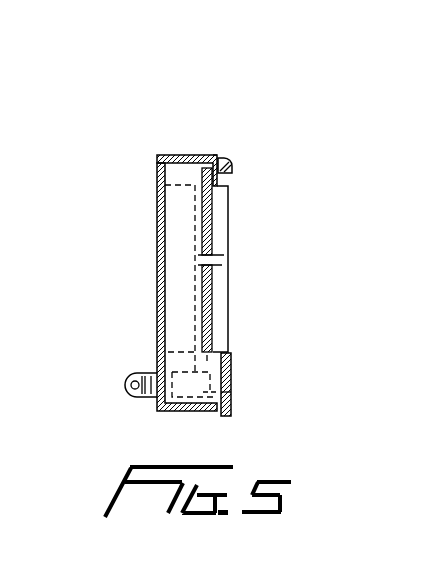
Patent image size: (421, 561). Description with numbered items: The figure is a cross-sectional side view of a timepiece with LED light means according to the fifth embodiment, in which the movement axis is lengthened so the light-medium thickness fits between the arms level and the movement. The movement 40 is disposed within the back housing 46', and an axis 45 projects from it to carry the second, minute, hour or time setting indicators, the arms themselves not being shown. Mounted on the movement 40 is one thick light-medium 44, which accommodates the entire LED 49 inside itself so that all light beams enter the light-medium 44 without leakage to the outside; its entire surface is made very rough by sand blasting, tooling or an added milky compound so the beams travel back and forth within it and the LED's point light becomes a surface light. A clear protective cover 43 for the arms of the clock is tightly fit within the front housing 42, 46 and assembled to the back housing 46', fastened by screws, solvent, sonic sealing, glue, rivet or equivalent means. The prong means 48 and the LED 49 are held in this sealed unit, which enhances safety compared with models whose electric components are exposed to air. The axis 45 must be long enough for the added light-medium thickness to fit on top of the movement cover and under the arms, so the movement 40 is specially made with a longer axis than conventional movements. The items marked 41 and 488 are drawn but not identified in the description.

The movement 40 is at (172, 217).
The top corner of housing 41 is at (218, 157).
The front housing 42 is at (235, 160).
The clear protective cover 43 is at (230, 208).
The light-medium 44 is at (213, 228).
The axis 45 is at (222, 262).
The front housing 46 is at (304, 382).
The back housing 46' is at (161, 116).
The prong means 48 is at (124, 393).
The LED 49 is at (200, 362).
The lower portion of side plate 488 is at (232, 392).